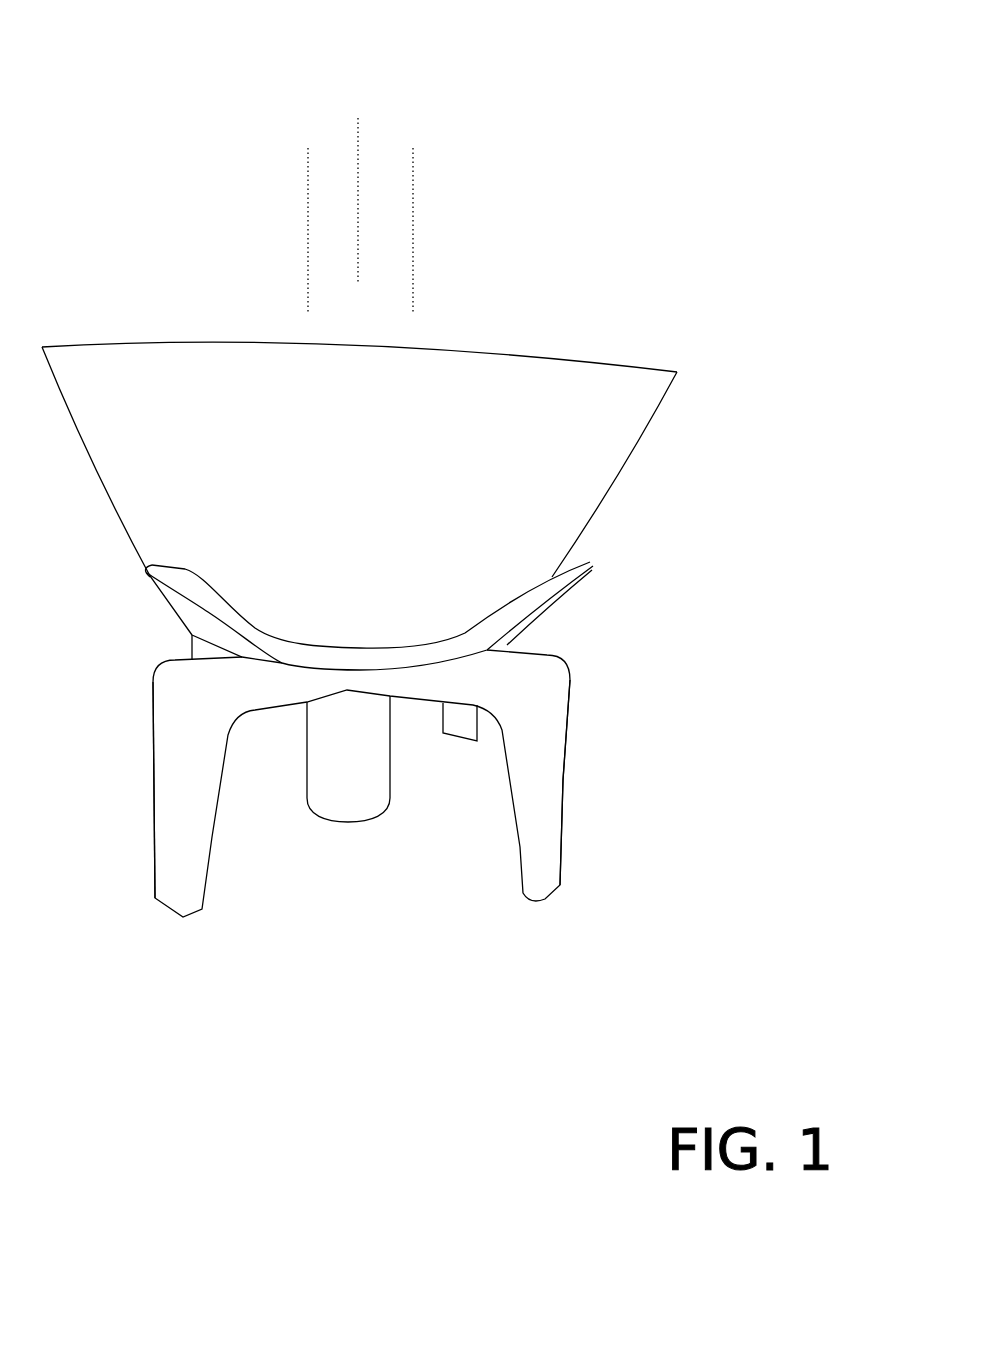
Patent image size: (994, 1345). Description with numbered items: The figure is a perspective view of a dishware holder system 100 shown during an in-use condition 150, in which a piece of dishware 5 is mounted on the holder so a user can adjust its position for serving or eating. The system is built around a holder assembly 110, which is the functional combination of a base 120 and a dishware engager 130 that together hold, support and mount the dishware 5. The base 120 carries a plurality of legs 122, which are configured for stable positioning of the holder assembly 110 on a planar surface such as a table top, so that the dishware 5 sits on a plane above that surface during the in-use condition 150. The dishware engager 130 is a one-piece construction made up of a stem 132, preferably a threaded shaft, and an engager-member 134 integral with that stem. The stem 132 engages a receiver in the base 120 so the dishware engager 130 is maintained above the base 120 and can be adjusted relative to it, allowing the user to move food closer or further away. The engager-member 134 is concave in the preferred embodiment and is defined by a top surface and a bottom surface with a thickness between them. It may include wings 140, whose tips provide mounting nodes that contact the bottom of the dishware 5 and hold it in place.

The dishware holder system 100 is at (544, 95).
The in-use condition 150 is at (629, 168).
The dishware 5 is at (636, 352).
The holder assembly 110 is at (392, 703).
The base 120 is at (429, 782).
The leg 122 is at (205, 835).
The dishware engager 130 is at (383, 588).
The stem 132 is at (398, 742).
The engager-member 134 is at (143, 575).
The wings 140 is at (586, 552).